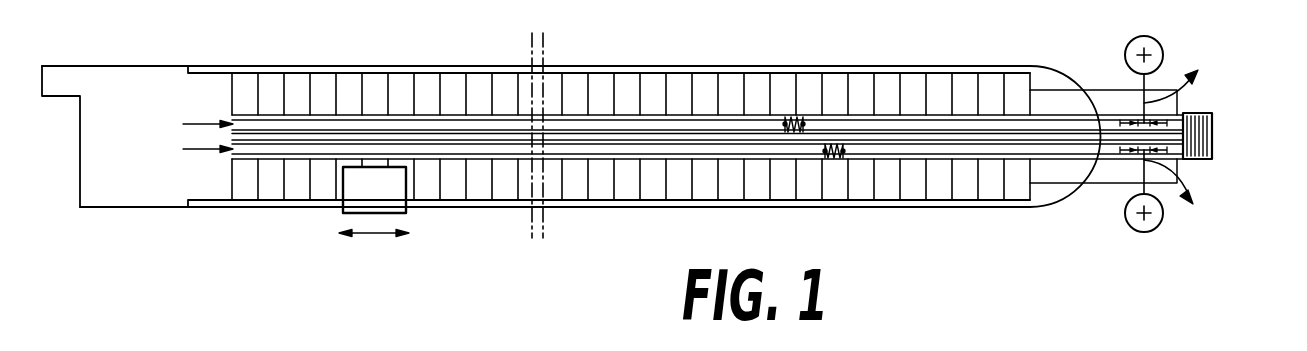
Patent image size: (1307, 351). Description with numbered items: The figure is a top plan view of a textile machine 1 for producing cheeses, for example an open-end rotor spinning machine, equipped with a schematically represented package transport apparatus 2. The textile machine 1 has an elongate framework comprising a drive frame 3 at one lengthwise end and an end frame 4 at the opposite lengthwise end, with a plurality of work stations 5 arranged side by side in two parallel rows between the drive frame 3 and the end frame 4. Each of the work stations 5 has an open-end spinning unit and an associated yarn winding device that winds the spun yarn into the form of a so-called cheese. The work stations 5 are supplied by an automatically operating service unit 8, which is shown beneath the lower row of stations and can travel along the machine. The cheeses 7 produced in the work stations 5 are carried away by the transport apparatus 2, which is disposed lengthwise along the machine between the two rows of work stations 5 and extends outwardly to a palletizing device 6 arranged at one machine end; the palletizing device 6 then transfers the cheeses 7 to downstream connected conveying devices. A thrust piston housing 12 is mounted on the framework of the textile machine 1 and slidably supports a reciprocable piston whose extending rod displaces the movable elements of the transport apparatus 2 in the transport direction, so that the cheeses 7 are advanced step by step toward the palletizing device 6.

The textile machine 1 is at (635, 237).
The transport apparatus 2 is at (730, 125).
The drive frame 3 is at (118, 80).
The end frame 4 is at (1103, 93).
The work stations 5 is at (427, 82).
The palletizing device 6 is at (1218, 87).
The cheeses 7 is at (797, 133).
The service unit 8 is at (357, 198).
The thrust piston housing 12 is at (183, 149).